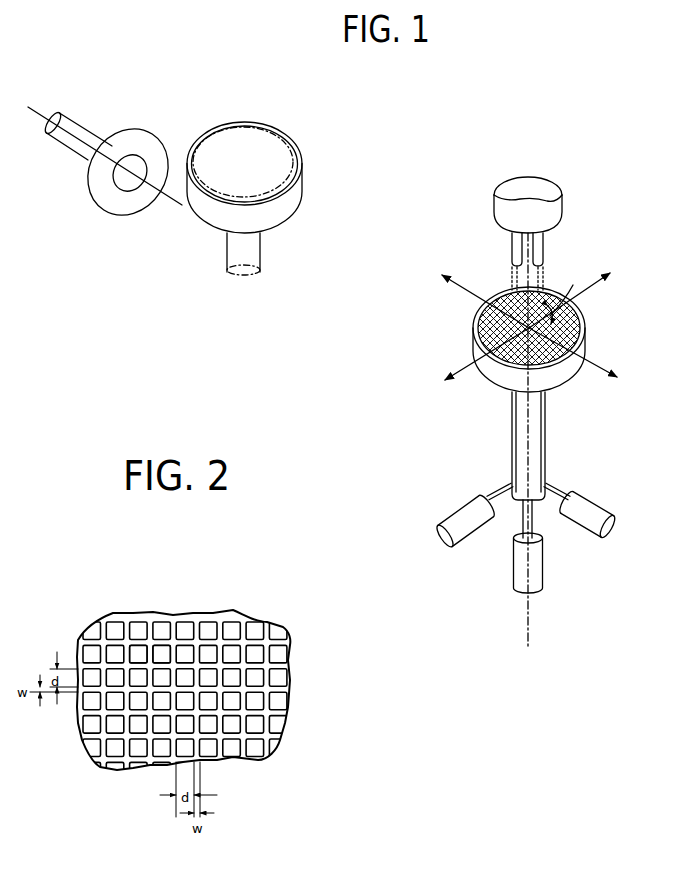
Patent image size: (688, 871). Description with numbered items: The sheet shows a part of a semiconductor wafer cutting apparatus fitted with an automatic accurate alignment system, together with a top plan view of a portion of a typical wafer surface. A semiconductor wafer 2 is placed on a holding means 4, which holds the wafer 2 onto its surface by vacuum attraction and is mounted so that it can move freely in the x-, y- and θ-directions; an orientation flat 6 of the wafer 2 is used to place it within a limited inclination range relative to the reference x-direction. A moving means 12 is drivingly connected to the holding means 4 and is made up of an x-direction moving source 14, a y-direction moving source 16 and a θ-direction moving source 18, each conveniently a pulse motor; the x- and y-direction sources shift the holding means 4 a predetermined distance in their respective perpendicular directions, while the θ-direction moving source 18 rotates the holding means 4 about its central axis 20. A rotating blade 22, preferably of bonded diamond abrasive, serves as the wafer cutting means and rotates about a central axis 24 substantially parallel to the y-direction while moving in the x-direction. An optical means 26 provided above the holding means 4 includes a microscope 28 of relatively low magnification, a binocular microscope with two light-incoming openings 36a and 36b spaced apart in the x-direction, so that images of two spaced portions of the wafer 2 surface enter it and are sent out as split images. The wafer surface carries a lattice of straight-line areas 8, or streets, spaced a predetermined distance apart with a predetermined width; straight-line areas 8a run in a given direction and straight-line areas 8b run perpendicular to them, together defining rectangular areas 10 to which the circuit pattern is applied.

In FIG. 1, the semiconductor wafer 2 is at (273, 128).
In FIG. 2, the semiconductor wafer 2 is at (223, 602).
In FIG. 1, the holding means 4 is at (302, 190).
In FIG. 1, the orientation flat 6 is at (497, 360).
In FIG. 2, the straight-line areas 8 is at (248, 640).
In FIG. 2, the straight-line area extending in a given direction 8a is at (284, 697).
In FIG. 2, the straight-line area extending in a perpendicular direction 8b is at (260, 723).
In FIG. 2, the rectangular areas 10 is at (138, 653).
In FIG. 1, the moving means 12 is at (523, 402).
In FIG. 1, the x-direction moving source 14 is at (452, 508).
In FIG. 1, the y-direction moving source 16 is at (607, 505).
In FIG. 1, the θ-direction moving source 18 is at (542, 578).
In FIG. 1, the central axis 20 is at (530, 436).
In FIG. 1, the rotating blade 22 is at (107, 207).
In FIG. 1, the central axis 24 is at (40, 114).
In FIG. 1, the optical means 26 is at (534, 216).
In FIG. 1, the microscope 28 is at (562, 203).
In FIG. 1, the light-incoming opening 36a is at (514, 266).
In FIG. 1, the light-incoming opening 36b is at (543, 253).